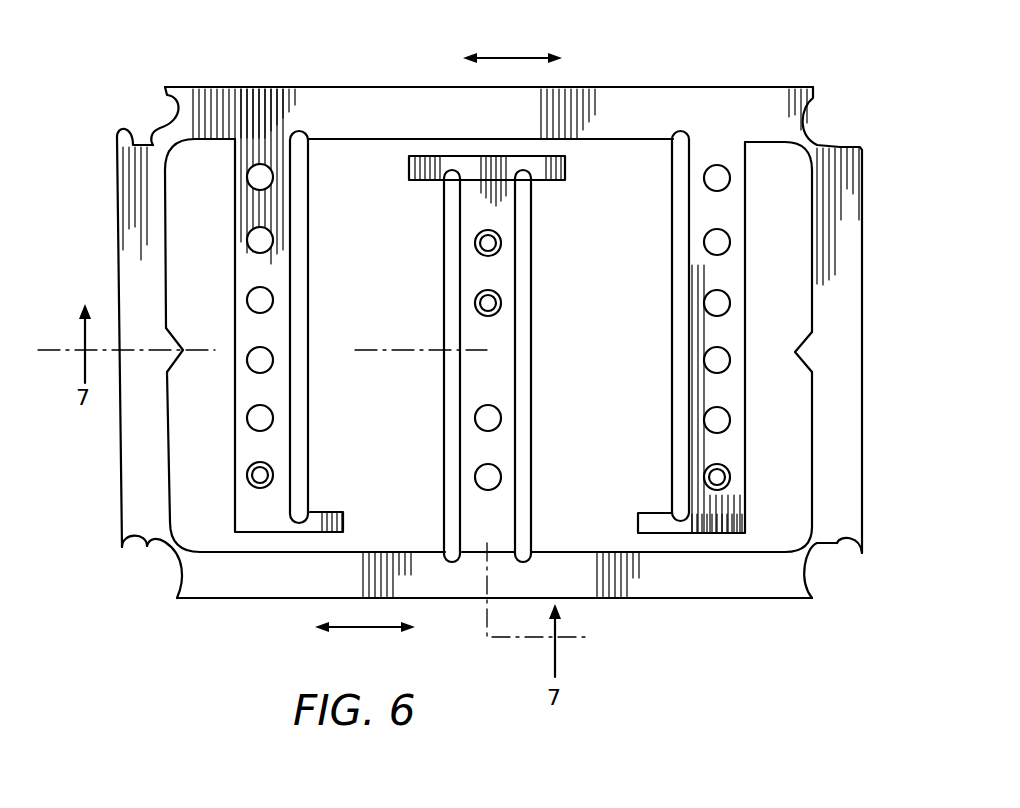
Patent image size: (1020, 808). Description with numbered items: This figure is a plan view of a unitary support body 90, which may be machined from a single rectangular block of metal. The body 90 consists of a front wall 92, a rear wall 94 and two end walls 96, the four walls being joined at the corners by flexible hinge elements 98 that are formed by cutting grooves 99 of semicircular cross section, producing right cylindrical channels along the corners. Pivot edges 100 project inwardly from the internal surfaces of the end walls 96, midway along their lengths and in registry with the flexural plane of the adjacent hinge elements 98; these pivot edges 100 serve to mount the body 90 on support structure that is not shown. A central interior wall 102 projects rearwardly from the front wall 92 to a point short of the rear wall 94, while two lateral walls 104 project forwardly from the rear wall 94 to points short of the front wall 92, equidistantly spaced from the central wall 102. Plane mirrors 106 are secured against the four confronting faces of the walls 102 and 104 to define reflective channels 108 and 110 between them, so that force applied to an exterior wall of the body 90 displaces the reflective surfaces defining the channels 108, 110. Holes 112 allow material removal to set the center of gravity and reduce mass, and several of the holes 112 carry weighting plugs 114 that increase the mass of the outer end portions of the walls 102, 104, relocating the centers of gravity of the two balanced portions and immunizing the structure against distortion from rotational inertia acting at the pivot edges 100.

The unitary support body 90 is at (627, 82).
The front wall 92 is at (263, 578).
The rear wall 94 is at (350, 105).
The end walls 96 is at (126, 435).
The flexible hinge elements 98 is at (152, 142).
The grooves 99 is at (110, 130).
The pivot edges 100 is at (177, 342).
The central interior wall 102 is at (502, 312).
The lateral walls 104 is at (280, 273).
The plane mirrors 106 is at (448, 450).
The reflective channel 108 is at (375, 157).
The reflective channel 110 is at (648, 150).
The holes 112 is at (271, 300).
The weighting plugs 114 is at (490, 243).